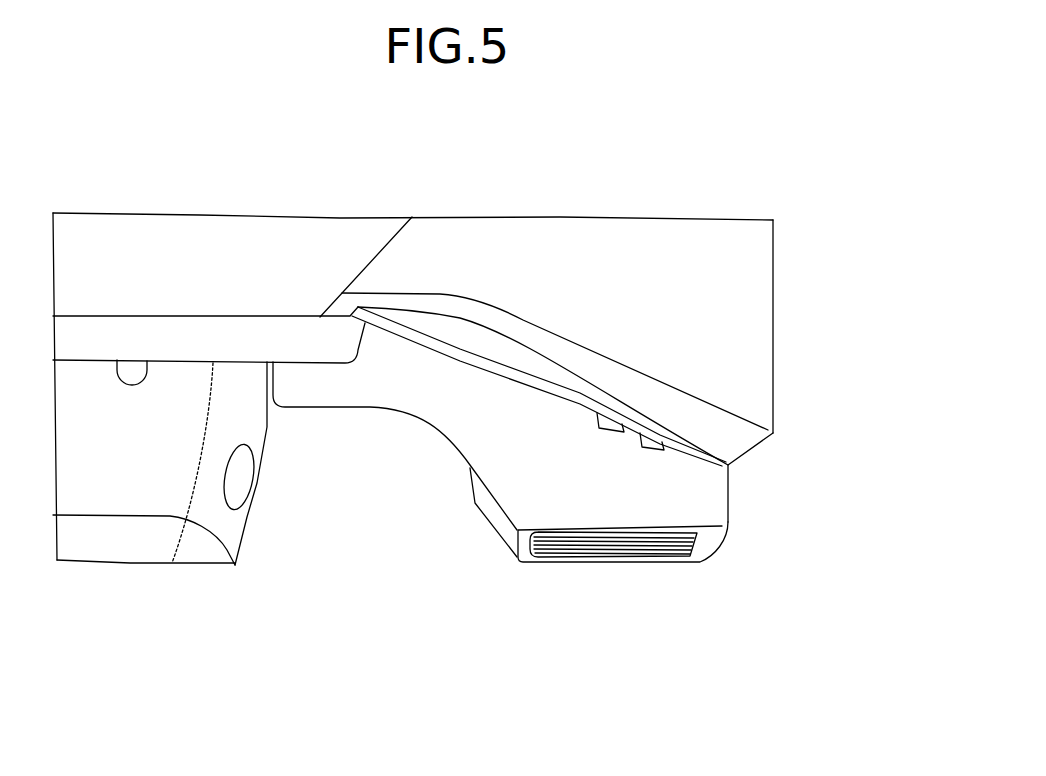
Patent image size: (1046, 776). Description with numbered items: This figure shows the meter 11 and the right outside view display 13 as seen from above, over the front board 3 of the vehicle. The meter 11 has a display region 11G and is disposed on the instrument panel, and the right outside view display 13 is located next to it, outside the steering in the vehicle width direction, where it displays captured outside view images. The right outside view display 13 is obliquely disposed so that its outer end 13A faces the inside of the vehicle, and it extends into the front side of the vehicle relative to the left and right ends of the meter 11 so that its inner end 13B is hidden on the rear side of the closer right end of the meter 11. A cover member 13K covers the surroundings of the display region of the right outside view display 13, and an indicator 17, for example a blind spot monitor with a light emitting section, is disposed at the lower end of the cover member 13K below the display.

The front board 3 is at (560, 487).
The meter 11 is at (195, 347).
The display region 11G is at (117, 360).
The right outside view display 13 is at (540, 345).
The outer end 13A is at (733, 440).
The inner end 13B is at (378, 306).
The cover member 13K is at (647, 392).
The indicator 17 is at (648, 448).